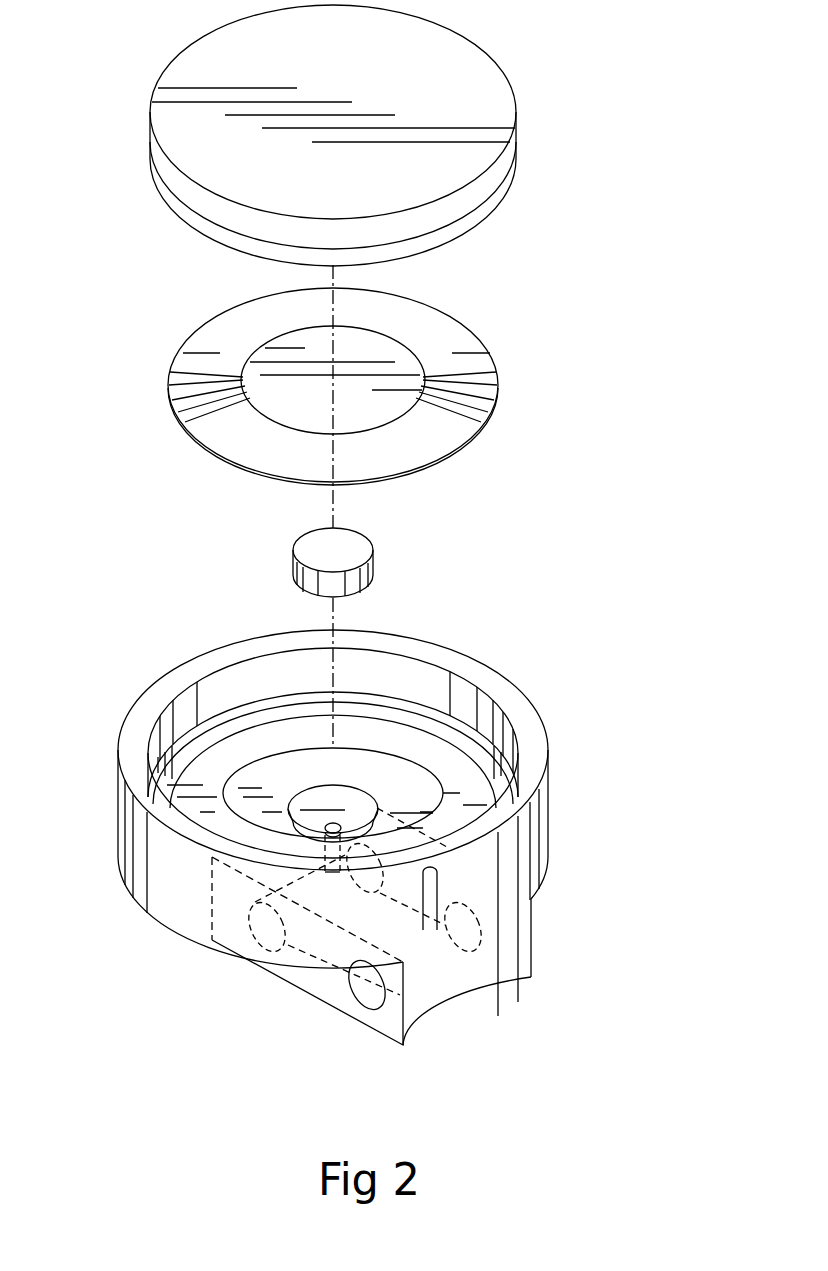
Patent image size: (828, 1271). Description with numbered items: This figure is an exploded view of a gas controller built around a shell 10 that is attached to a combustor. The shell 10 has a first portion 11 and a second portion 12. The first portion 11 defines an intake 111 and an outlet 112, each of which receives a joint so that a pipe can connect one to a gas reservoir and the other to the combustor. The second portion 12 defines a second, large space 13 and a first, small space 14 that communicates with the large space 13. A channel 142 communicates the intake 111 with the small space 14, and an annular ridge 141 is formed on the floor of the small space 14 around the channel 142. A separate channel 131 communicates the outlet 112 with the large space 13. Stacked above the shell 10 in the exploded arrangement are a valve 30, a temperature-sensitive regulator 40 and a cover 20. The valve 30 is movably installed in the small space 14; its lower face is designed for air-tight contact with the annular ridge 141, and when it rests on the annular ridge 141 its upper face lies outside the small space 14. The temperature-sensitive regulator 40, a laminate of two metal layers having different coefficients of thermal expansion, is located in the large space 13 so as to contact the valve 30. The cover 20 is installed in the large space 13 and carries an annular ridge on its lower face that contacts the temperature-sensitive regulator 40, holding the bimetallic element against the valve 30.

The shell 10 is at (376, 863).
The first portion 11 is at (523, 927).
The intake 111 is at (243, 953).
The outlet 112 is at (370, 987).
The second portion 12 is at (517, 708).
The second, large space 13 is at (388, 738).
The channel 131 is at (278, 953).
The first, small space 14 is at (350, 795).
The annular ridge 141 is at (377, 808).
The channel 142 is at (400, 822).
The cover 20 is at (503, 106).
The valve 30 is at (348, 553).
The temperature-sensitive regulator 40 is at (478, 362).